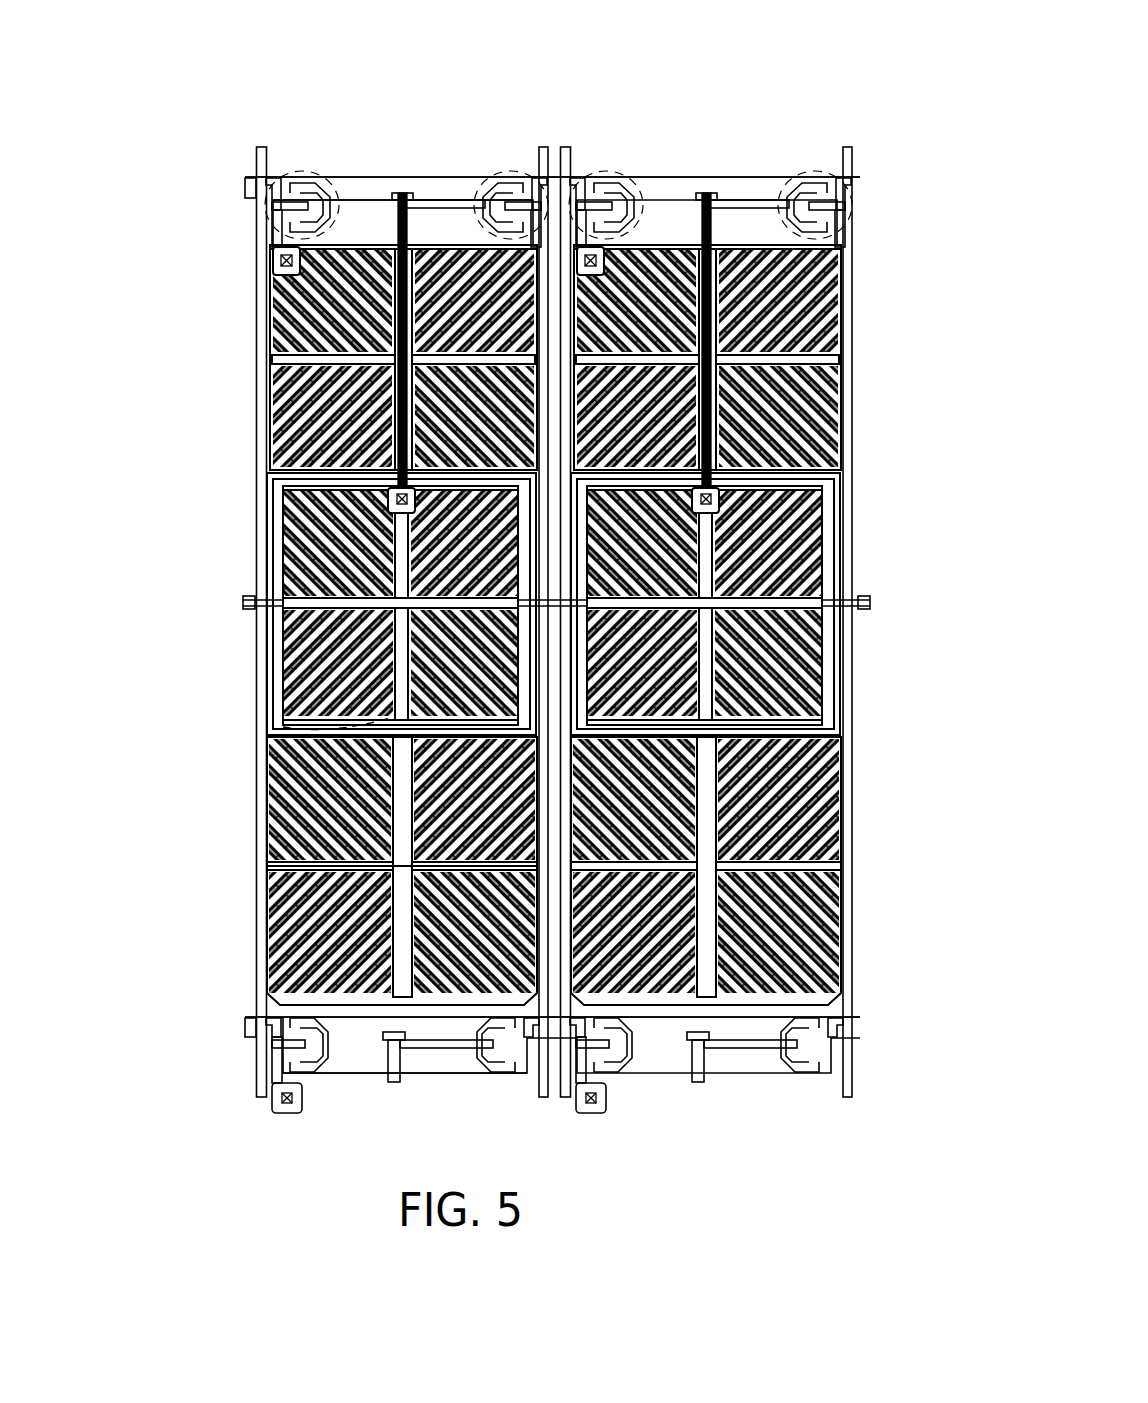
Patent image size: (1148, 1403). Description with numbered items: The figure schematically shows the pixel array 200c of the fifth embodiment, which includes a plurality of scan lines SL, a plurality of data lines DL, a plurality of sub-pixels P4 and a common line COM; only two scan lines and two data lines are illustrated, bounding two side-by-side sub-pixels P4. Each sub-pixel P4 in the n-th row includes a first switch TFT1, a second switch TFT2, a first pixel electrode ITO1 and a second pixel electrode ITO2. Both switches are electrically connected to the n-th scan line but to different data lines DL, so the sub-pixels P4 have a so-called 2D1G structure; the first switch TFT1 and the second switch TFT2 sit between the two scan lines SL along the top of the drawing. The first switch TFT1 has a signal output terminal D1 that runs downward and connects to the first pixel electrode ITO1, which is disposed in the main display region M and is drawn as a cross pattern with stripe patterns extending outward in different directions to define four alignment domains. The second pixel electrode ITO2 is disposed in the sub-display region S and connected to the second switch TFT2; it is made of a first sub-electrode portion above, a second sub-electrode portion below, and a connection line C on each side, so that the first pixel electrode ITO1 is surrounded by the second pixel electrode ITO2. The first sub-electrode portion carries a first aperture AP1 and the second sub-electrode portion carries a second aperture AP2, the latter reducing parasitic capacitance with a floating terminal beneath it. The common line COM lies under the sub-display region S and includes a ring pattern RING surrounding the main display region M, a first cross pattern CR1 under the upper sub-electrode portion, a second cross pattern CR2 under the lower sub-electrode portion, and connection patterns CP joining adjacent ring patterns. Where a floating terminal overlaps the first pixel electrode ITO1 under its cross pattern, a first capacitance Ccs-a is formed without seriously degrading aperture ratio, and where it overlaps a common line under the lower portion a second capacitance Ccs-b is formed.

The sub-pixel P4 is at (490, 573).
The data lines DL is at (396, 565).
The scan lines SL is at (471, 623).
The first switch TFT1 is at (482, 168).
The second switch TFT2 is at (308, 168).
The signal output terminal D1 is at (405, 250).
The first aperture AP1 is at (393, 318).
The second aperture AP2 is at (395, 900).
The second pixel electrode ITO2 is at (273, 772).
The first pixel electrode ITO1 is at (293, 642).
The common line COM is at (333, 647).
The first cross pattern CR1 is at (273, 438).
The second cross pattern CR2 is at (268, 862).
The ring pattern RING is at (272, 496).
The connection pattern CP is at (283, 600).
The connection line C is at (268, 672).
The first capacitance Ccs-a is at (288, 725).
The second capacitance Ccs-b is at (236, 1034).
The sub-display region S is at (858, 245).
The main display region M is at (858, 475).
The pixel array 200c is at (835, 1151).